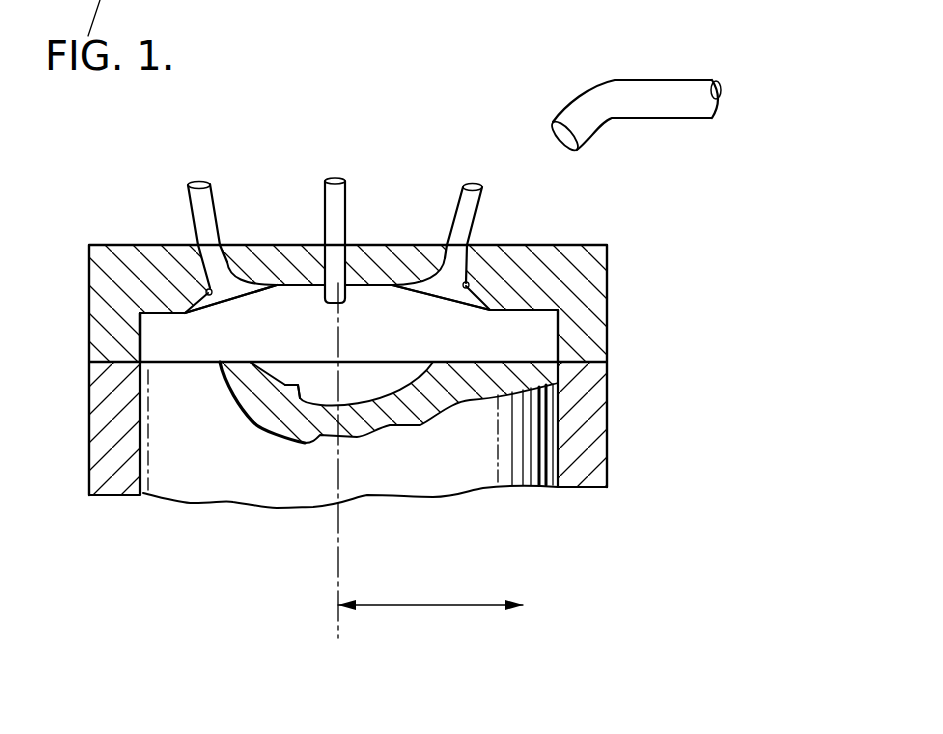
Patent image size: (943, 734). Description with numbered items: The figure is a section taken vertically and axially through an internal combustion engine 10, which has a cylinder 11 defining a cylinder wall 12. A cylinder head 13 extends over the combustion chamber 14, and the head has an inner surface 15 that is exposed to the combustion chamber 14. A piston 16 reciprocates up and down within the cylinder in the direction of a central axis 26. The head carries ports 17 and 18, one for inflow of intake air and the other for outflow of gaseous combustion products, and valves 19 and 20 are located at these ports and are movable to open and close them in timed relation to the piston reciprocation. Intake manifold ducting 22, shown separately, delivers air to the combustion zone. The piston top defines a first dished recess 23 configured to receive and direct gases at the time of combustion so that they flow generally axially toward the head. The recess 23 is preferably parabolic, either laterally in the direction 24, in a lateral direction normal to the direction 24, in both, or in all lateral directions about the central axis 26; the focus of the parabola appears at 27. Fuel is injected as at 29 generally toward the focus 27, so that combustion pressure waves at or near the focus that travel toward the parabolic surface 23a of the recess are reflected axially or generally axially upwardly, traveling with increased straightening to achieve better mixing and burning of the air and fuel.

The internal combustion engine 10 is at (660, 316).
The cylinder 11 is at (610, 395).
The cylinder wall 12 is at (600, 456).
The cylinder head 13 is at (573, 253).
The combustion chamber 14 is at (298, 297).
The inner surface 15 is at (150, 319).
The piston 16 is at (233, 484).
The port 17 is at (202, 295).
The port 18 is at (466, 282).
The valve 19 is at (210, 292).
The valve 20 is at (445, 288).
The intake manifold ducting 22 is at (688, 83).
The first dished recess 23 is at (290, 390).
The parabolic surface 23a is at (363, 383).
The lateral direction 24 is at (447, 607).
The central axis 26 is at (337, 550).
The focus 27 is at (335, 333).
The fuel injection 29 is at (347, 198).